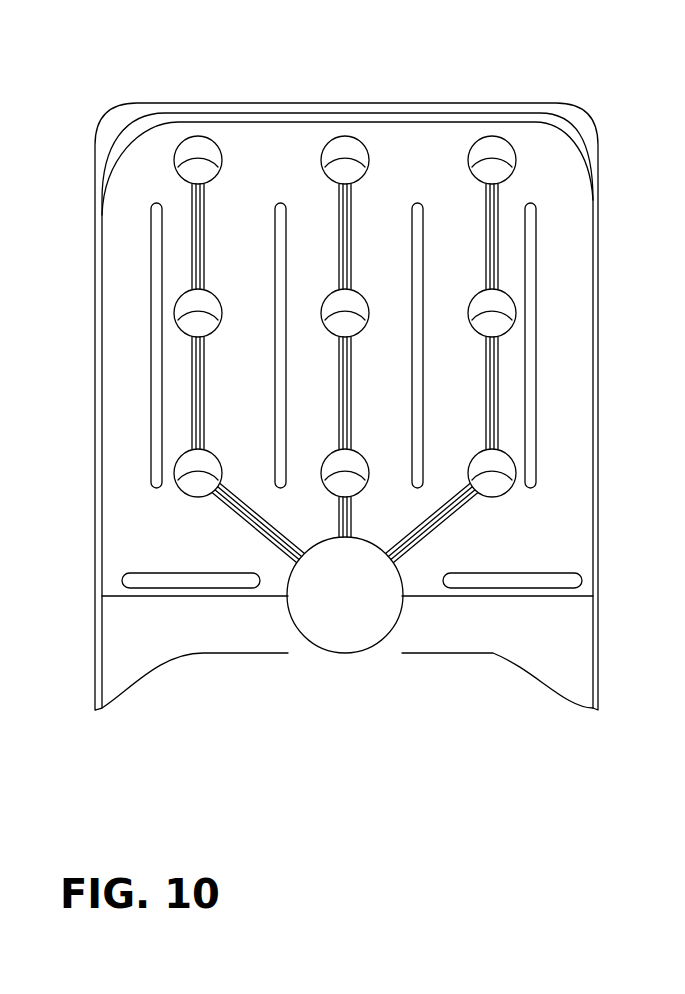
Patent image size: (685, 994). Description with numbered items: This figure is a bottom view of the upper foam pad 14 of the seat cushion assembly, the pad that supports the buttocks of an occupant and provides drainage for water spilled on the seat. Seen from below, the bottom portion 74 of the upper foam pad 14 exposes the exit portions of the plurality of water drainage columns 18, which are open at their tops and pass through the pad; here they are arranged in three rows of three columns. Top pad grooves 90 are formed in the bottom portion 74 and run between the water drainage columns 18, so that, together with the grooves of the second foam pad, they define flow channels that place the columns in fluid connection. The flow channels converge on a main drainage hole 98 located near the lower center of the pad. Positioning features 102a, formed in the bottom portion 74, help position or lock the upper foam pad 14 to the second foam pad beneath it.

The upper foam pad 14 is at (180, 84).
The water drainage columns 18 is at (207, 143).
The bottom portion 74 is at (560, 267).
The top pad grooves 90 is at (190, 245).
The main drainage hole 98 is at (344, 603).
The positioning features 102a is at (527, 465).